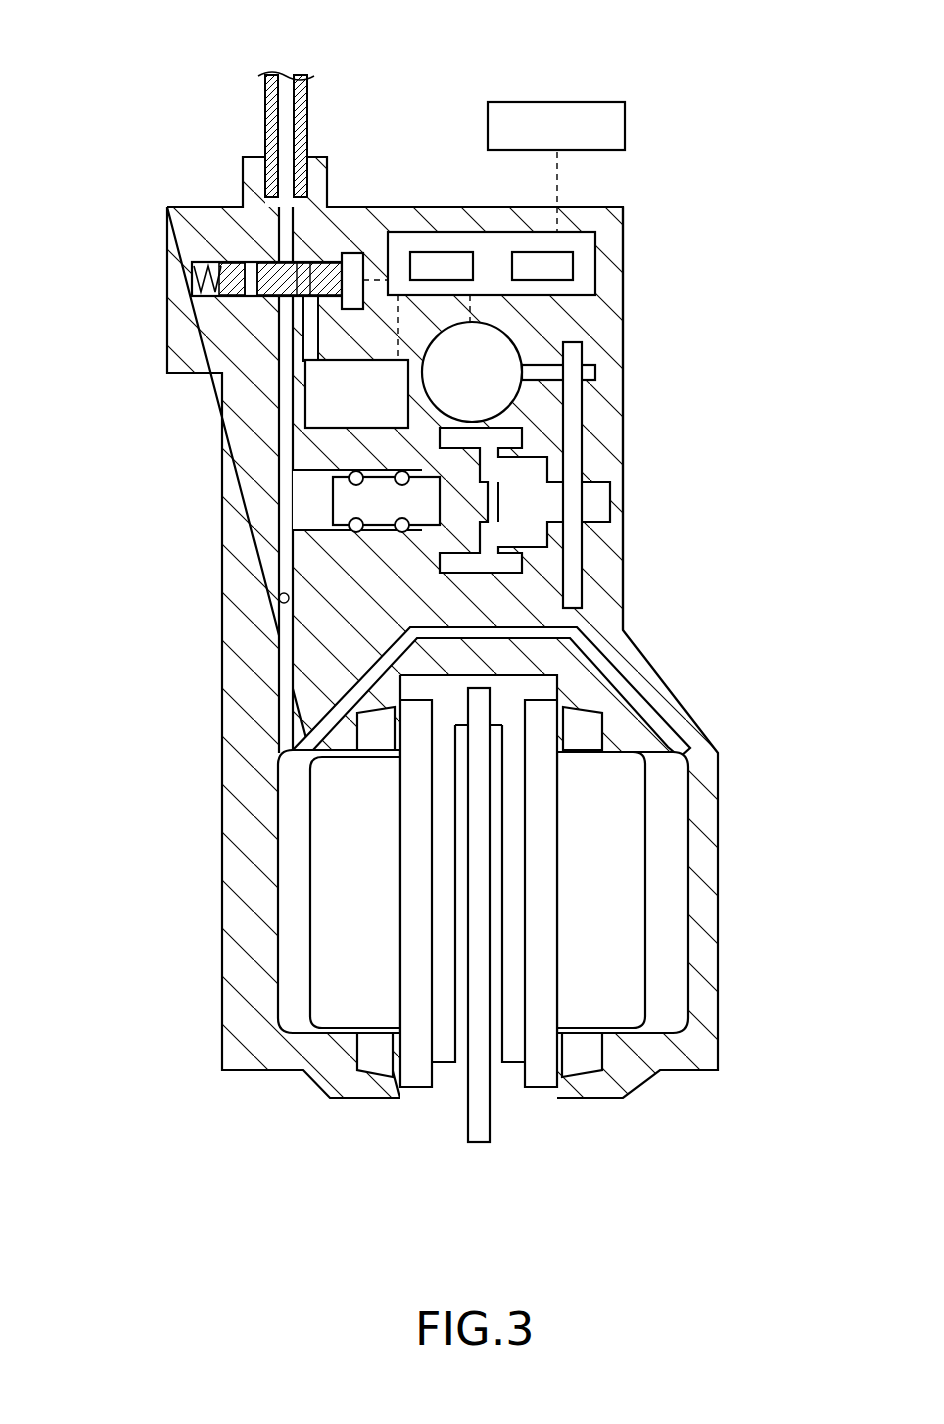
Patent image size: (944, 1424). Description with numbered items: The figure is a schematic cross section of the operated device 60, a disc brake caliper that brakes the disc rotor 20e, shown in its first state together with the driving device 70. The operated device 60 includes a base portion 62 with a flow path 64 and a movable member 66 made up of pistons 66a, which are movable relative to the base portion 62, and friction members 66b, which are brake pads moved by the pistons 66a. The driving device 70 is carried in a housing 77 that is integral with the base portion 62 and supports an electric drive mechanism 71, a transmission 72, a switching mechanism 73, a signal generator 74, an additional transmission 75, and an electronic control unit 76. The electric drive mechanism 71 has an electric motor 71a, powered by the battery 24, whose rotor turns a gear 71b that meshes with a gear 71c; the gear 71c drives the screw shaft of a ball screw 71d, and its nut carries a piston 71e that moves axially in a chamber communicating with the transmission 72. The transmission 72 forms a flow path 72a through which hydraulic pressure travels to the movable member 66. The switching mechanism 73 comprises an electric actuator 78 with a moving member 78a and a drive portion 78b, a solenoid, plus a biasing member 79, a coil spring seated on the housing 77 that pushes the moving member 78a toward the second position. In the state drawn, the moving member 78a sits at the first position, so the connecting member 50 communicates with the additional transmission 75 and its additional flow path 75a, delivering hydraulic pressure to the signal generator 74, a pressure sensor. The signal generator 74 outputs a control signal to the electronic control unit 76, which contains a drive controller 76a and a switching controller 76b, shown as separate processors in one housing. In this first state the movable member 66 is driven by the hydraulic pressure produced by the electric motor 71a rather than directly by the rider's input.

The disc rotor 20e is at (480, 1143).
The battery 24 is at (582, 102).
The connecting member 50 is at (308, 110).
The operated device 60 is at (411, 652).
The base portion 62 is at (413, 630).
The flow path 64 is at (284, 792).
The movable member 66 is at (474, 982).
The pistons 66a is at (345, 917).
The friction members 66b is at (447, 1058).
The driving device 70 is at (439, 452).
The electric drive mechanism 71 is at (577, 452).
The electric motor 71a is at (498, 397).
The gear 71b is at (583, 380).
The gear 71c is at (572, 472).
The ball screw 71d is at (523, 535).
The piston 71e is at (372, 512).
The transmission 72 is at (152, 480).
The flow path 72a is at (281, 602).
The switching mechanism 73 is at (215, 218).
The signal generator 74 is at (322, 410).
The additional transmission 75 is at (297, 320).
The additional flow path 75a is at (312, 343).
The electronic control unit 76 is at (558, 244).
The drive controller 76a is at (573, 262).
The switching controller 76b is at (445, 250).
The housing 77 is at (610, 305).
The electric actuator 78 is at (227, 243).
The moving member 78a is at (325, 290).
The drive portion 78b is at (350, 253).
The biasing member 79 is at (197, 287).